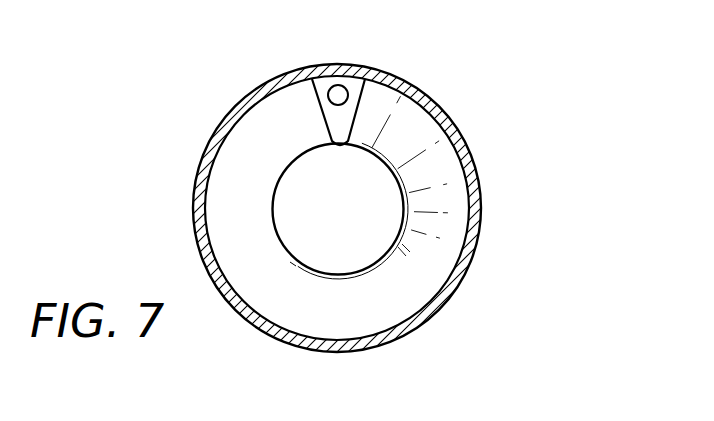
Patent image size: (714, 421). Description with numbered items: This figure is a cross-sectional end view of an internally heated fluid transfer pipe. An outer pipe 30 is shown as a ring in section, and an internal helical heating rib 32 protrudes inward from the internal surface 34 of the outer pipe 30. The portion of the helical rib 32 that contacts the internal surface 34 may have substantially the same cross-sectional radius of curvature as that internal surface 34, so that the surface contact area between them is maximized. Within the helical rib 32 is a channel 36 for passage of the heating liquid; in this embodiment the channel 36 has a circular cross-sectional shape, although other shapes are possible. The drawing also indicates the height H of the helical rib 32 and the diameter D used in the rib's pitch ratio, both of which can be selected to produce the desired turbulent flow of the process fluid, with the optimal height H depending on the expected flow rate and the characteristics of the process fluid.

The outer pipe 30 is at (193, 238).
The internal helical heating rib 32 is at (315, 103).
The internal surface of the outer pipe 34 is at (462, 163).
The channel 36 is at (338, 95).
The pitch diameter (D of pitch ratio L:D) D is at (465, 240).
The height of the helical rib H is at (305, 152).